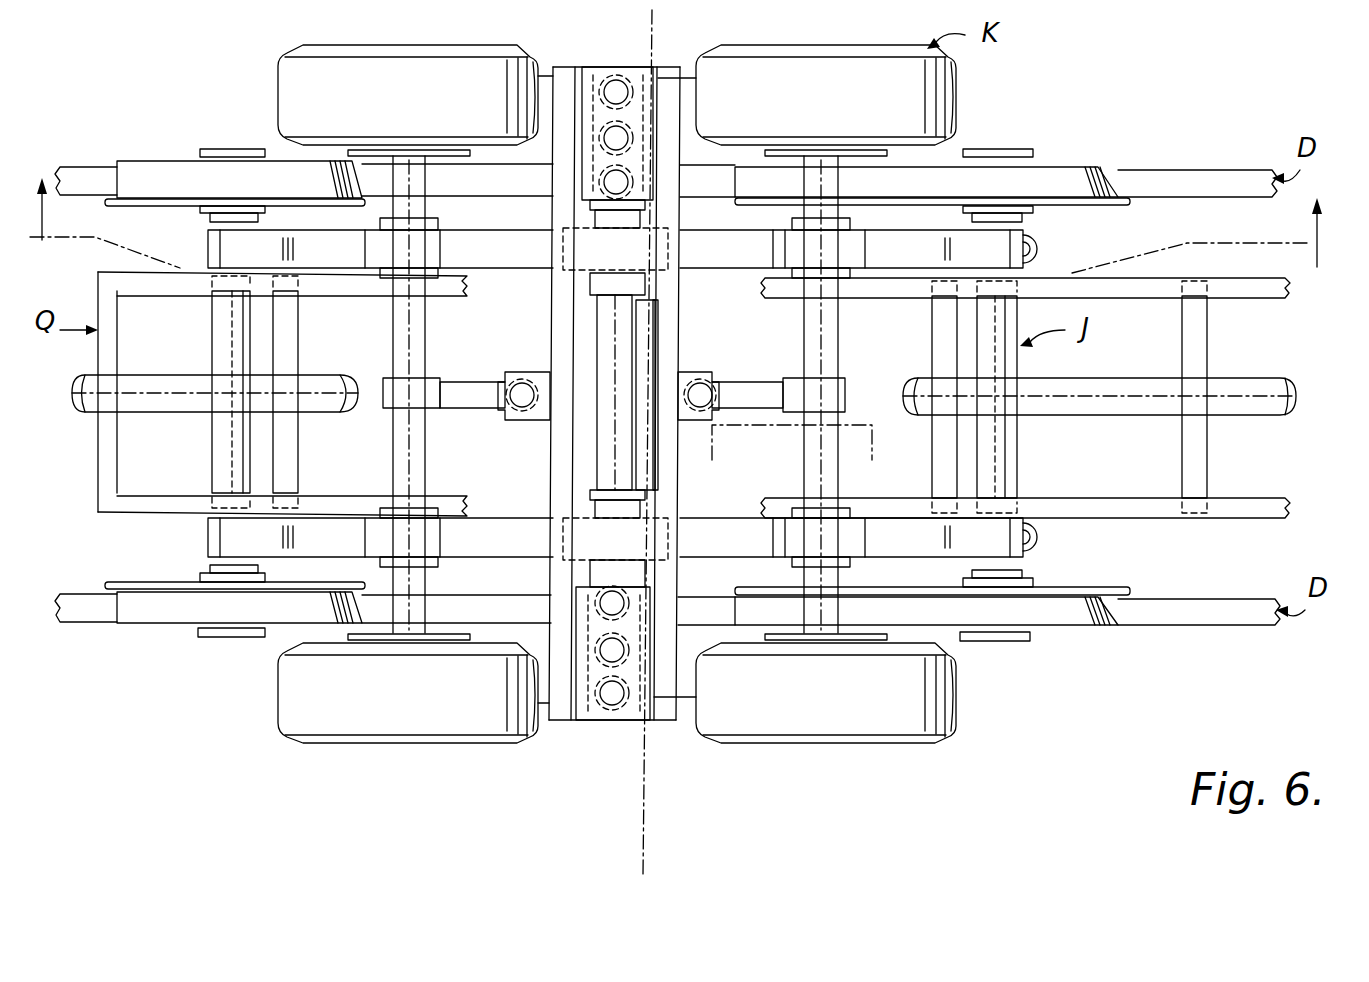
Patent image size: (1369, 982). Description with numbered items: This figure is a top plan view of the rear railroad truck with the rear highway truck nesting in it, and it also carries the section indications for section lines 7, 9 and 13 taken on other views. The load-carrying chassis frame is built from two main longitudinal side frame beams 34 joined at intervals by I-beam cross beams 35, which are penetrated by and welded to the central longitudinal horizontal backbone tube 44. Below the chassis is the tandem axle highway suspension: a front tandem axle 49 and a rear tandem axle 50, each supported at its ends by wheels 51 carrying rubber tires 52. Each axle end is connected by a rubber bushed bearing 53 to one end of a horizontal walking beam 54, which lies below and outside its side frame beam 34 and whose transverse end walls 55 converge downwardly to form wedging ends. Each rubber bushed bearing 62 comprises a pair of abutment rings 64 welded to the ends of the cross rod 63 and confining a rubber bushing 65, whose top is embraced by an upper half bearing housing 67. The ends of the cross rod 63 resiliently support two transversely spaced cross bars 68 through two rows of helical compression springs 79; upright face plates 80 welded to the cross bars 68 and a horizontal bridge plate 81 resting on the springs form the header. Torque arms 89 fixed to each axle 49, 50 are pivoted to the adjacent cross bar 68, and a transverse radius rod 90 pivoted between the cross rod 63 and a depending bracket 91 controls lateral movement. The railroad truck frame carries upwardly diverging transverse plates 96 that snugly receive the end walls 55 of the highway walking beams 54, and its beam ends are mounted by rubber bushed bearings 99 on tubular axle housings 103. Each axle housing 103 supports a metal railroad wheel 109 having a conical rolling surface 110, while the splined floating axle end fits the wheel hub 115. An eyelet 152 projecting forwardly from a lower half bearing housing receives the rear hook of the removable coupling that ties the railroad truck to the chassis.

The section line 7- 7 is at (685, 228).
The section line 9- 9 is at (800, 449).
The section line 13- 13 is at (605, 25).
The main longitudinal side frame beam 34 is at (137, 283).
The cross beam 35 is at (100, 462).
The backbone tube 44 is at (75, 388).
The front tandem axle 49 is at (832, 362).
The rear tandem axle 50 is at (395, 355).
The wheel 51 is at (284, 68).
The rubber tire 52 is at (358, 52).
The rubber bushed bearing 53 is at (403, 268).
The walking beam 54 is at (512, 278).
The transverse end wall 55 is at (615, 393).
The rubber bushed bearing 62 is at (585, 222).
The cross rod 63 is at (605, 342).
The abutment ring 64 is at (655, 200).
The rubber bushing 65 is at (585, 195).
The upper half bearing housing 67 is at (816, 235).
The cross bar 68 is at (553, 104).
The helical compression spring 79 is at (632, 70).
The face plate 80 is at (538, 77).
The bridge plate 81 is at (590, 70).
The torque arm 89 is at (752, 385).
The radius rod 90 is at (645, 352).
The bracket 91 is at (660, 310).
The transverse plate 96 is at (245, 245).
The rubber bushed bearing 99 is at (195, 226).
The tubular axle housing 103 is at (222, 425).
The railroad wheel 109 is at (168, 162).
The conical rolling surface 110 is at (1118, 618).
The wheel hub 115 is at (240, 149).
The eyelet 152 is at (1050, 252).